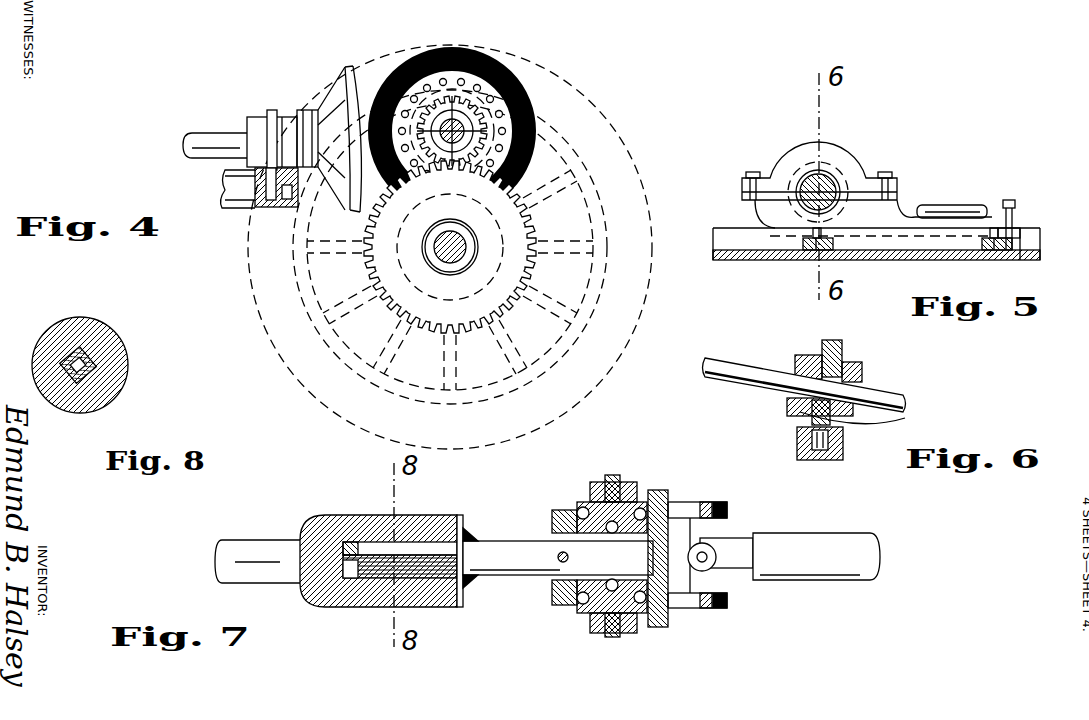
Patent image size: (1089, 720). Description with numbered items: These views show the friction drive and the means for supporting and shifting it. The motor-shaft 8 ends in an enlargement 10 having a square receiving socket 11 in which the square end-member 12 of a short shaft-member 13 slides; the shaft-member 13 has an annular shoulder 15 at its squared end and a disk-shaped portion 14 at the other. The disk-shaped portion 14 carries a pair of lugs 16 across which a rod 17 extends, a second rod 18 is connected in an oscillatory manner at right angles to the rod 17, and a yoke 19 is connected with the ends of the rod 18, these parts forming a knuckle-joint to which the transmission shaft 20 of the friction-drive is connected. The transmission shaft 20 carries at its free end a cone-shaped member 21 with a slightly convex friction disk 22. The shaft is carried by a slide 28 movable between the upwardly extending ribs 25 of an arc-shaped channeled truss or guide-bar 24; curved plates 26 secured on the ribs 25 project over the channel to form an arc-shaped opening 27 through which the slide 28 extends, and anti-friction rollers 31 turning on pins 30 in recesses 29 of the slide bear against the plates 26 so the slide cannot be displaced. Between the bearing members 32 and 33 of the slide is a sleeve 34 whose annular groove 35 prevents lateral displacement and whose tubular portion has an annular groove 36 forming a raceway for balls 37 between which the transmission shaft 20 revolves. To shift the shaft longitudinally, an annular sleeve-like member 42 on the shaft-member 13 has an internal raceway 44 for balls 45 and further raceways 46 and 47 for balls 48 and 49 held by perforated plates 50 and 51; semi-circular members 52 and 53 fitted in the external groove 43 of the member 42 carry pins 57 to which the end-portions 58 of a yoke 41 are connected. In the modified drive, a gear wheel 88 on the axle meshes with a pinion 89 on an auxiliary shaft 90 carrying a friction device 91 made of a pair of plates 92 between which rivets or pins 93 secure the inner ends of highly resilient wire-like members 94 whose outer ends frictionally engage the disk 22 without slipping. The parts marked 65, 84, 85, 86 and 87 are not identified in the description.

In FIG. 7, the power-driven or motor-shaft 8 is at (262, 540).
In FIG. 7, the enlargement 10 is at (340, 515).
In FIG. 8, the enlargement 10 is at (102, 336).
In FIG. 7, the receiving socket 11 is at (345, 578).
In FIG. 8, the receiving socket 11 is at (92, 360).
In FIG. 7, the end-member 12 is at (418, 542).
In FIG. 8, the end-member 12 is at (93, 371).
In FIG. 7, the shaft-member 13 is at (495, 576).
In FIG. 7, the plate or disk-shaped portion 14 is at (656, 500).
In FIG. 7, the annular shoulder 15 is at (462, 515).
In FIG. 7, the posts or lugs 16 is at (720, 608).
In FIG. 7, the rod or bar 17 is at (716, 530).
In FIG. 7, the second rod or bar 18 is at (730, 545).
In FIG. 7, the yoke 19 is at (770, 580).
In FIG. 4, the transmission shaft 20 is at (212, 141).
In FIG. 6, the transmission shaft 20 is at (905, 396).
In FIG. 4, the cone-shaped member 21 is at (338, 98).
In FIG. 4, the friction disk or plate 22 is at (352, 76).
In FIG. 4, the channeled truss or guide-bar 24 is at (238, 196).
In FIG. 5, the channeled truss or guide-bar 24 is at (745, 261).
In FIG. 6, the channeled truss or guide-bar 24 is at (830, 462).
In FIG. 5, the upwardly extending rib 25 is at (1035, 255).
In FIG. 6, the upwardly extending rib 25 is at (806, 460).
In FIG. 4, the curved plate 26 is at (246, 170).
In FIG. 5, the curved plate 26 is at (760, 230).
In FIG. 6, the curved plate 26 is at (800, 445).
In FIG. 4, the arc-shaped opening 27 is at (293, 192).
In FIG. 5, the arc-shaped opening 27 is at (760, 218).
In FIG. 6, the arc-shaped opening 27 is at (800, 430).
In FIG. 4, the slide 28 is at (276, 207).
In FIG. 5, the slide 28 is at (877, 217).
In FIG. 6, the slide 28 is at (800, 412).
In FIG. 5, the recesses 29 is at (998, 250).
In FIG. 5, the pin 30 is at (975, 235).
In FIG. 6, the pin 30 is at (820, 460).
In FIG. 4, the anti-friction wheel or roller 31 is at (270, 200).
In FIG. 5, the anti-friction wheel or roller 31 is at (986, 250).
In FIG. 6, the anti-friction wheel or roller 31 is at (835, 455).
In FIG. 4, the retaining or bearing member 32 is at (300, 112).
In FIG. 5, the retaining or bearing member 32 is at (900, 206).
In FIG. 6, the retaining or bearing member 32 is at (905, 418).
In FIG. 4, the retaining or bearing member 33 is at (272, 110).
In FIG. 5, the retaining or bearing member 33 is at (838, 162).
In FIG. 6, the retaining or bearing member 33 is at (835, 340).
In FIG. 4, the sleeve 34 is at (262, 120).
In FIG. 5, the sleeve 34 is at (840, 168).
In FIG. 6, the sleeve 34 is at (860, 378).
In FIG. 5, the annular groove 35 is at (850, 176).
In FIG. 6, the annular groove 35 is at (790, 405).
In FIG. 5, the annular groove or channel 36 is at (797, 185).
In FIG. 6, the annular groove or channel 36 is at (812, 362).
In FIG. 5, the anti-friction balls or rollers 37 is at (813, 174).
In FIG. 6, the anti-friction balls or rollers 37 is at (800, 372).
In FIG. 7, the yoke 41 is at (590, 620).
In FIG. 7, the annular sleeve-like member 42 is at (578, 598).
In FIG. 7, the external annular groove 43 is at (590, 610).
In FIG. 7, the internal annular raceway 44 is at (589, 555).
In FIG. 7, the anti-friction balls 45 is at (631, 555).
In FIG. 7, the raceway 46 is at (655, 490).
In FIG. 7, the raceway 47 is at (575, 590).
In FIG. 7, the balls 48 is at (675, 502).
In FIG. 7, the balls 49 is at (560, 582).
In FIG. 7, the plate 50 is at (680, 608).
In FIG. 7, the plate 51 is at (555, 510).
In FIG. 7, the semi-circular member 52 is at (585, 502).
In FIG. 7, the semi-circular member 53 is at (650, 627).
In FIG. 7, the studs or pins 57 is at (615, 637).
In FIG. 7, the end-portions 58 is at (605, 637).
In FIG. 7, the spacer ring 65 is at (552, 522).
In FIG. 5, the lever 84 is at (955, 210).
In FIG. 5, the pivot bolt 85 is at (1016, 218).
In FIG. 5, the bolt head 86 is at (1012, 200).
In FIG. 5, the nut 87 is at (1022, 236).
In FIG. 4, the gear wheel 88 is at (510, 228).
In FIG. 4, the pinion 89 is at (470, 130).
In FIG. 4, the auxiliary shaft 90 is at (535, 118).
In FIG. 4, the friction device 91 is at (459, 98).
In FIG. 4, the plates or disks 92 is at (505, 68).
In FIG. 4, the rivets, bolts, or pins 93 is at (452, 50).
In FIG. 4, the wire-like members 94 is at (418, 57).